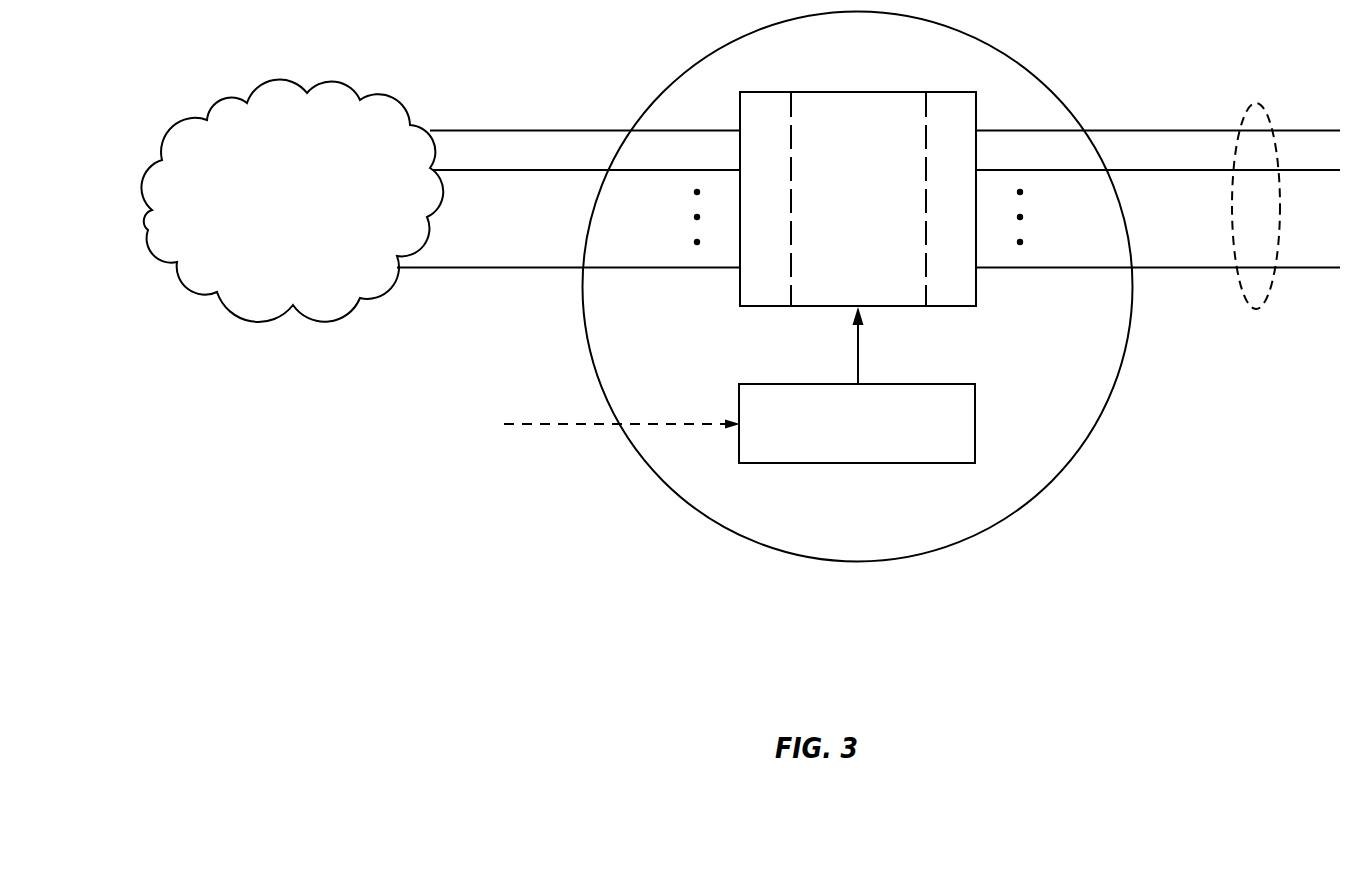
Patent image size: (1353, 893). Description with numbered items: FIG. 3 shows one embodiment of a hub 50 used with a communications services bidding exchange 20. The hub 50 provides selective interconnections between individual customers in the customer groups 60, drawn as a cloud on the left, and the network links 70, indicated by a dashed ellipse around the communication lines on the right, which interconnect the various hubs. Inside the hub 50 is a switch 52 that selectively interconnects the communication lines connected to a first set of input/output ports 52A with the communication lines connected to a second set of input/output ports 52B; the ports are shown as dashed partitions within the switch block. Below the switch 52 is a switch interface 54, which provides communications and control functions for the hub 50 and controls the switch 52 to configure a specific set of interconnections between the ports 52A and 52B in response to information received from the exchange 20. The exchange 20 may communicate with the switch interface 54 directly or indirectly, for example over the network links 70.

The exchange 20 is at (572, 417).
The hub 50 is at (1003, 53).
The switch 52 is at (880, 91).
The first set of input/output (I/O) ports 52A is at (793, 177).
The second set of I/O ports 52B is at (925, 219).
The switch interface 54 is at (896, 463).
The customer groups 60 is at (367, 102).
The network links 70 is at (1263, 113).